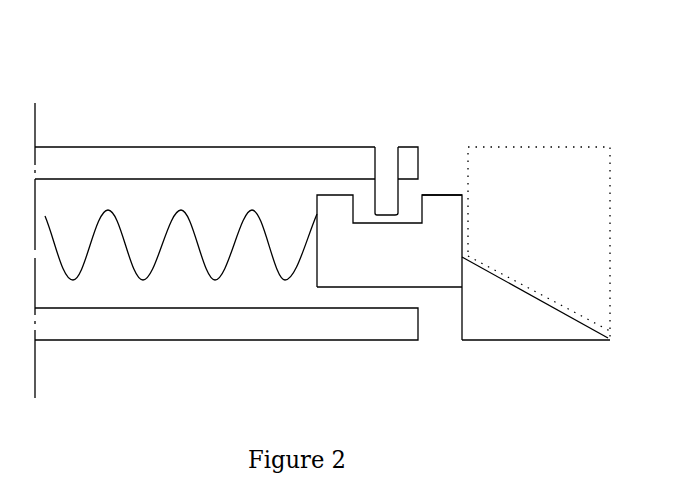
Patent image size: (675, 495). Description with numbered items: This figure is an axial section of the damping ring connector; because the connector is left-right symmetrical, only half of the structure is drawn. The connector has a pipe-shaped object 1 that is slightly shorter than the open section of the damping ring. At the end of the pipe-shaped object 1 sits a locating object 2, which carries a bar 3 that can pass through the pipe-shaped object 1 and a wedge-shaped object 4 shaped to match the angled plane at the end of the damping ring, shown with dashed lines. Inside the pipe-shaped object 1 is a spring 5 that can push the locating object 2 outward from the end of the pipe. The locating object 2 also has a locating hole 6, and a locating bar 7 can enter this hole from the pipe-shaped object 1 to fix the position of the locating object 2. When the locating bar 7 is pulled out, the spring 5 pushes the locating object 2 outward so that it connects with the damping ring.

The pipe-shaped object 1 is at (105, 165).
The locating object 2 is at (463, 243).
The bar 3 is at (402, 253).
The wedge-shaped object 4 is at (495, 297).
The spring 5 is at (185, 218).
The locating hole 6 is at (410, 204).
The locating bar 7 is at (392, 146).